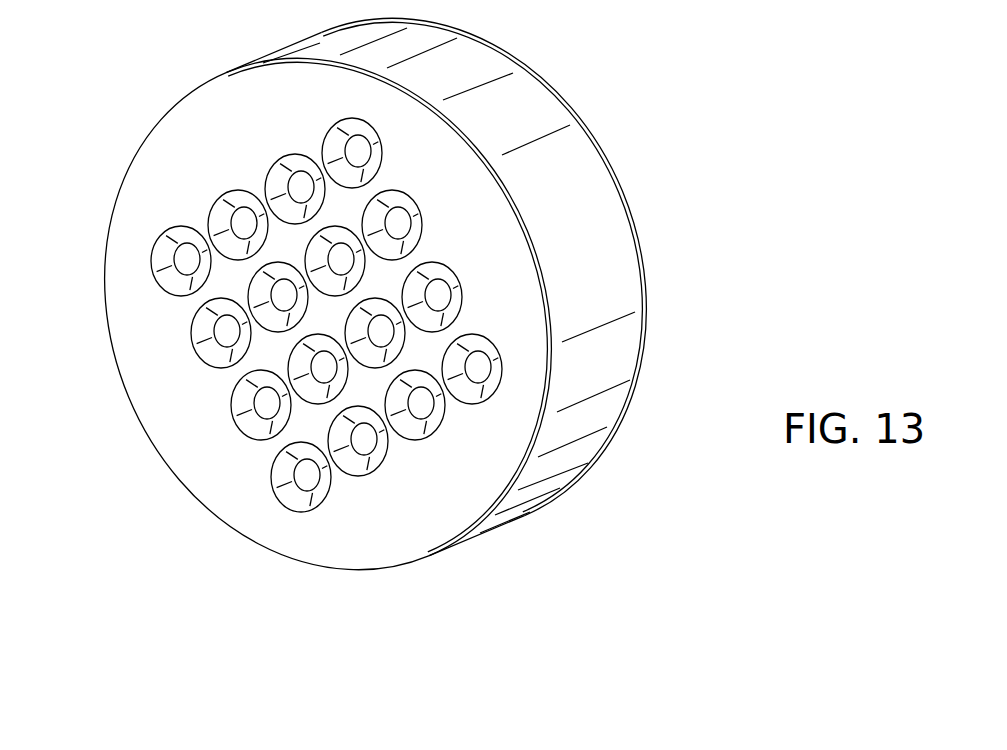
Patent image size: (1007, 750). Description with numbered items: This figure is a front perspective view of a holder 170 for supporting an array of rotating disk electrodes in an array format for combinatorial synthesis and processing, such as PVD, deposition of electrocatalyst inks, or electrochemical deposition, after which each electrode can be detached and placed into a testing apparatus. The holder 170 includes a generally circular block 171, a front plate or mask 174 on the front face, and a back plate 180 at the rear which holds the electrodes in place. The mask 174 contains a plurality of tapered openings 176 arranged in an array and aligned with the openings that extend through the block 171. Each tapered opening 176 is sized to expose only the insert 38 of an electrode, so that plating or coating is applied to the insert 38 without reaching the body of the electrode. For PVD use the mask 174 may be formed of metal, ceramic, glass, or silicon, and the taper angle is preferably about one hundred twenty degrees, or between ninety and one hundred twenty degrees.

The insert 38 is at (240, 223).
The holder 170 is at (537, 493).
The block 171 is at (615, 360).
The front plate (mask) 174 is at (497, 247).
The tapered openings 176 is at (268, 180).
The back plate 180 is at (650, 277).